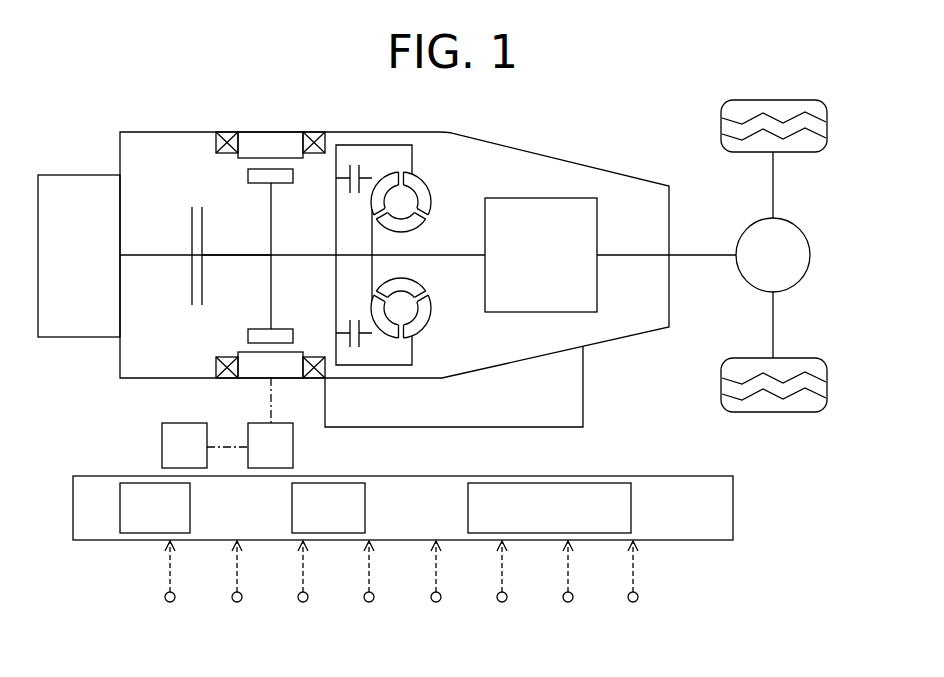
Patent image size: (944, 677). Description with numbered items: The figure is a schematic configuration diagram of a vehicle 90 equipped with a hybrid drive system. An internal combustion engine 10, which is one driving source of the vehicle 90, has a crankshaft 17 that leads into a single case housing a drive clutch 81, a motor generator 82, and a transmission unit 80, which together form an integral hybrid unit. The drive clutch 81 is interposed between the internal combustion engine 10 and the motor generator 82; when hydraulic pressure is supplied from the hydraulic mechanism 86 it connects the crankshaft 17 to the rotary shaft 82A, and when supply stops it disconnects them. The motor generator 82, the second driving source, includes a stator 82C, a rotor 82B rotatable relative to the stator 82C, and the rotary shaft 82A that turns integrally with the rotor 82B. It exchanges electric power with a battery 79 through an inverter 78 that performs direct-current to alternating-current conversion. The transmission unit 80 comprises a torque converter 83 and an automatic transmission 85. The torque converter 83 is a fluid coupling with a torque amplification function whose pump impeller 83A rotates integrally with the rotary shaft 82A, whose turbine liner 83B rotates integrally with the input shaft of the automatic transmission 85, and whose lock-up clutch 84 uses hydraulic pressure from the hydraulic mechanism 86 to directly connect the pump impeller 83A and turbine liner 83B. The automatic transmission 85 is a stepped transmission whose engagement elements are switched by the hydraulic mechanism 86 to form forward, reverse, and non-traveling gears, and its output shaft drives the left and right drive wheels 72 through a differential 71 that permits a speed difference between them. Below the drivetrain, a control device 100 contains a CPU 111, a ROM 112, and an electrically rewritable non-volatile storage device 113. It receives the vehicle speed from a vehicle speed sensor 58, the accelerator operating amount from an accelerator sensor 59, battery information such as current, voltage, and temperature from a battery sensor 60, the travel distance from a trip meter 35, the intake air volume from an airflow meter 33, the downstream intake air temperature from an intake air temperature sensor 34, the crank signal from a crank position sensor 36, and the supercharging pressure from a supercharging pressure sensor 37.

The internal combustion engine 10 is at (68, 175).
The crankshaft 17 is at (150, 255).
The airflow meter 33 is at (436, 602).
The intake air temperature sensor 34 is at (502, 602).
The trip meter 35 is at (369, 602).
The crank position sensor 36 is at (568, 602).
The supercharging pressure sensor 37 is at (633, 602).
The vehicle speed sensor 58 is at (170, 602).
The accelerator sensor 59 is at (237, 602).
The battery sensor 60 is at (303, 602).
The differential 71 is at (811, 255).
The drive wheels 72 is at (828, 125).
The inverter 78 is at (293, 445).
The battery 79 is at (162, 447).
The transmission unit 80 is at (508, 169).
The drive clutch 81 is at (193, 309).
The motor generator 82 is at (271, 225).
The rotary shaft 82A is at (229, 255).
The rotor 82B is at (291, 329).
The stator 82C is at (299, 160).
The torque converter 83 is at (418, 261).
The pump impeller 83A is at (432, 197).
The turbine liner 83B is at (399, 172).
The lock-up clutch 84 is at (354, 352).
The automatic transmission 85 is at (597, 281).
The hydraulic mechanism 86 is at (585, 383).
The vehicle 90 is at (638, 131).
The control device 100 is at (438, 508).
The CPU 111 is at (190, 502).
The ROM 112 is at (365, 502).
The storage device 113 is at (631, 502).